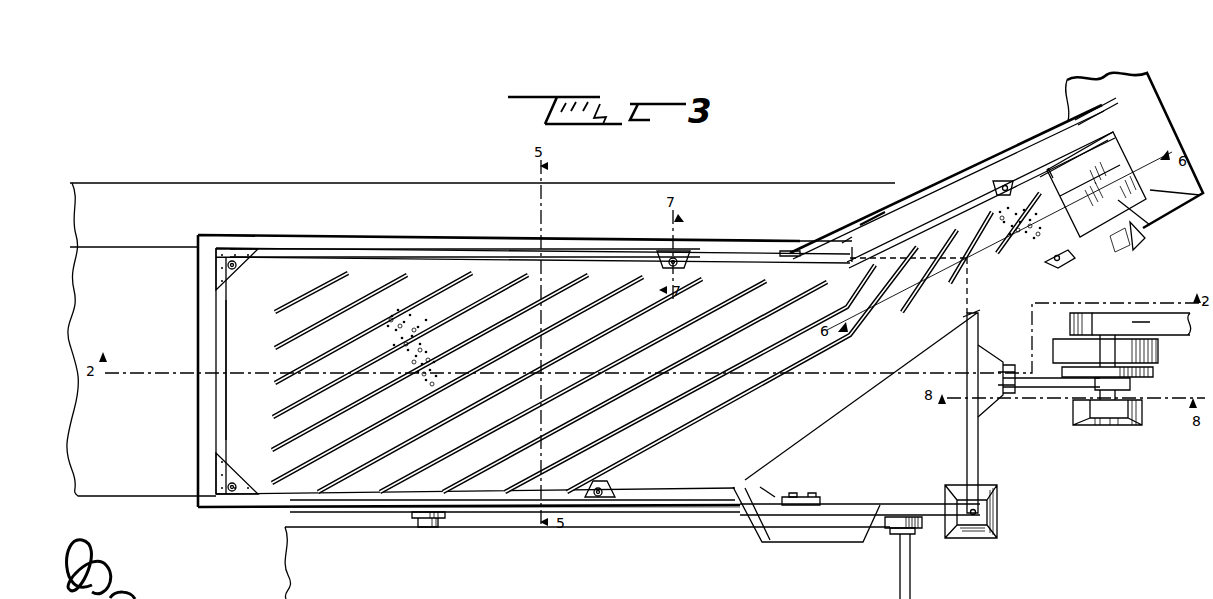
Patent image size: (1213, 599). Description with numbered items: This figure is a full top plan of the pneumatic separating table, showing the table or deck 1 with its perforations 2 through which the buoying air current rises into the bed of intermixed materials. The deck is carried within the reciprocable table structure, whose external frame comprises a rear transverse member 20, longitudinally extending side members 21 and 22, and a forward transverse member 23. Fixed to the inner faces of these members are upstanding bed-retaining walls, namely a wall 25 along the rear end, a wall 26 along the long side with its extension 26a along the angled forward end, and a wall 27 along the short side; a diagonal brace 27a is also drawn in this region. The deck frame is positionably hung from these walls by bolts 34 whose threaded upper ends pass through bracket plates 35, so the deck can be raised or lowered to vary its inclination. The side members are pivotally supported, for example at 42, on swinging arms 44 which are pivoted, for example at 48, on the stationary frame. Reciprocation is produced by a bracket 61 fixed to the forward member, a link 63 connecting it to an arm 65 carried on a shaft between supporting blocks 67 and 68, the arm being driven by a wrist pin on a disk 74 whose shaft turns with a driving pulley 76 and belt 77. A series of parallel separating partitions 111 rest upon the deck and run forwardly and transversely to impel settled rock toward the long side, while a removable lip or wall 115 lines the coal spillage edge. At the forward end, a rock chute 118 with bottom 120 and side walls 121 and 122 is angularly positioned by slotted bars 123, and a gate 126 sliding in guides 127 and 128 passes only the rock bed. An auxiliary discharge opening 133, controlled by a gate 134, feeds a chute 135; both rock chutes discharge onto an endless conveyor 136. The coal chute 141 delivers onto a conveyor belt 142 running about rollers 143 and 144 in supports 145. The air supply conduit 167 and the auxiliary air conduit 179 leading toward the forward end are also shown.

The table or deck 1 is at (597, 244).
The perforations 2 is at (412, 328).
The rear transverse member 20 is at (501, 371).
The side member 21 is at (465, 228).
The side member 22 is at (469, 527).
The forward transverse member 23 is at (986, 412).
The bed-retaining wall 25 is at (189, 376).
The bed-retaining wall 26 is at (465, 232).
The wall extension 26a is at (947, 186).
The bed-retaining wall 27 is at (515, 525).
The diagonal brace 27a is at (861, 396).
The bolts 34 is at (481, 377).
The bracket plates 35 is at (424, 373).
The pivotal support 42 is at (815, 488).
The arms 44 is at (799, 479).
The pivot 48 is at (769, 479).
The bracket 61 is at (1003, 372).
The link 63 is at (1051, 403).
The arm 65 is at (1149, 389).
The supporting block 67 is at (1128, 354).
The supporting block 68 is at (1118, 431).
The disk 74 is at (1132, 359).
The driving pulley 76 is at (1066, 321).
The belt 77 is at (1147, 334).
The separating partitions 111 is at (641, 342).
The lip or wall 115 is at (690, 378).
The chute 118 is at (1135, 251).
The chute bottom 120 is at (1117, 184).
The chute side wall 121 is at (1154, 223).
The chute side wall 122 is at (1077, 111).
The slotted bars 123 is at (1094, 185).
The gate 126 is at (1029, 231).
The guide 127 is at (1050, 149).
The guide 128 is at (1086, 269).
The discharge opening 133 is at (826, 224).
The gate 134 is at (857, 201).
The chute 135 is at (979, 161).
The endless traveling conveyor 136 is at (1101, 150).
The chute 141 is at (795, 521).
The endless conveyor belt 142 is at (918, 566).
The roller 143 is at (923, 550).
The roller 144 is at (412, 530).
The supports 145 is at (922, 536).
The conduit 167 is at (55, 331).
The auxiliary air conduit 179 is at (481, 379).